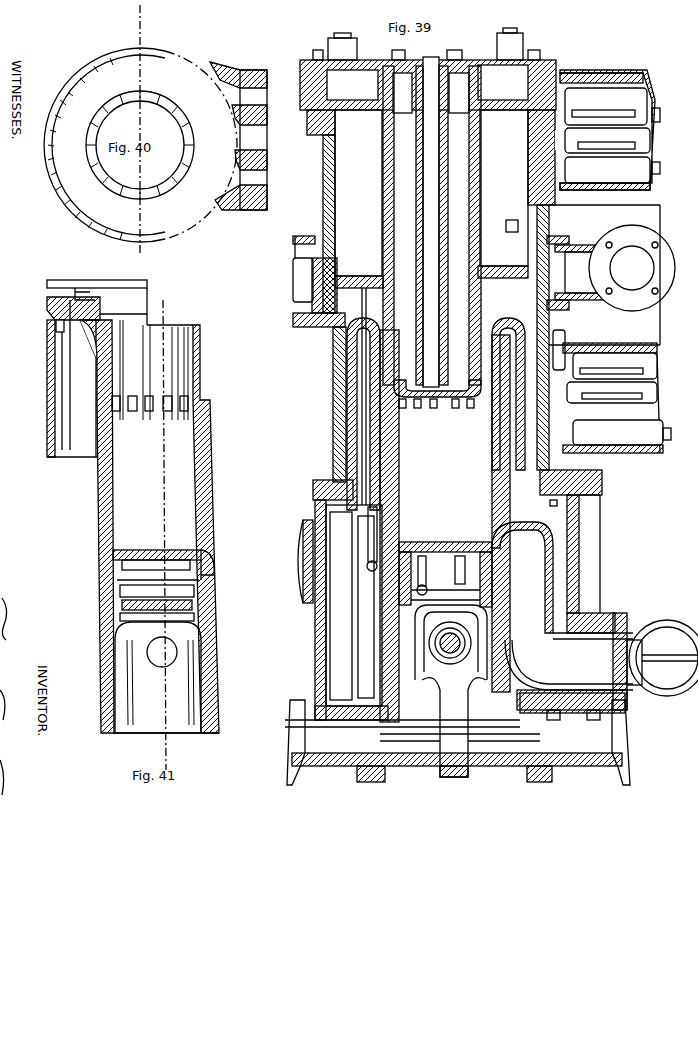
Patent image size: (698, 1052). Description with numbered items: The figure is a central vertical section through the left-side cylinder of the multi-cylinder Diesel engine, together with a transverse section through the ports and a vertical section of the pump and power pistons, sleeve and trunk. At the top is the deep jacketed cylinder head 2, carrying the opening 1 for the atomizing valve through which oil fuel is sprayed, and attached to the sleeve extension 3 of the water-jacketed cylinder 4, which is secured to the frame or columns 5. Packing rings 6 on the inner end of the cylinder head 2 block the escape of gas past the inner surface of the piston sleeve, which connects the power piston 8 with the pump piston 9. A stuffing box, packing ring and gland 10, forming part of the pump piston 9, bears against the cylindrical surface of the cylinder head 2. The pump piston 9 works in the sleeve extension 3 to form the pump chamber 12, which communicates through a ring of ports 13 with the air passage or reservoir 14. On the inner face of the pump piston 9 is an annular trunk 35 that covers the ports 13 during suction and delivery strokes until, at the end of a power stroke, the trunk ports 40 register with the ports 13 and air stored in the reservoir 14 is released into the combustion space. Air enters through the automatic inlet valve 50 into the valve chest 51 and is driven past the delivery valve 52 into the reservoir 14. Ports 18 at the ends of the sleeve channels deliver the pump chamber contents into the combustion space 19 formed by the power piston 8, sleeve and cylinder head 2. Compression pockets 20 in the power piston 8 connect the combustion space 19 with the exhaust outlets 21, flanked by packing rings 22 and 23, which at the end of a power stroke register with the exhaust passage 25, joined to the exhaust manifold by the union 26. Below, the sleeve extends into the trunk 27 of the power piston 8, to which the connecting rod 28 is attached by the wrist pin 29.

In FIG. 39, the opening for the atomizing valve 1 is at (433, 222).
In FIG. 39, the cylinder head 2 is at (378, 83).
In FIG. 39, the sleeve extension 3 is at (323, 185).
In FIG. 39, the water-jacketed cylinder 4 is at (600, 552).
In FIG. 39, the frame or columns 5 is at (457, 404).
In FIG. 39, the packing rings 6 is at (482, 365).
In FIG. 41, the power piston 8 is at (113, 555).
In FIG. 39, the pump piston 9 is at (355, 276).
In FIG. 41, the pump piston 9 is at (70, 296).
In FIG. 39, the stuffing box, packing ring and gland 10 is at (500, 266).
In FIG. 41, the stuffing box, packing ring and gland 10 is at (105, 284).
In FIG. 39, the pump chamber 12 is at (431, 193).
In FIG. 39, the ring of ports 13 is at (322, 322).
In FIG. 39, the air passage 14 is at (293, 282).
In FIG. 39, the ports 18 is at (470, 410).
In FIG. 40, the ports 18 is at (195, 147).
In FIG. 41, the ports 18 is at (210, 402).
In FIG. 39, the combustion space 19 is at (445, 475).
In FIG. 41, the combustion space 19 is at (156, 479).
In FIG. 39, the compression pockets 20 is at (480, 540).
In FIG. 41, the compression pockets 20 is at (172, 540).
In FIG. 41, the exhaust outlets 21 is at (208, 555).
In FIG. 39, the packing ring 22 is at (492, 486).
In FIG. 41, the packing ring 22 is at (99, 512).
In FIG. 39, the packing ring 23 is at (343, 600).
In FIG. 41, the packing ring 23 is at (113, 613).
In FIG. 39, the exhaust passage 25 is at (562, 606).
In FIG. 39, the union 26 is at (624, 712).
In FIG. 39, the trunk 27 is at (503, 705).
In FIG. 41, the trunk 27 is at (214, 670).
In FIG. 39, the connecting rod 28 is at (454, 727).
In FIG. 39, the wrist pin 29 is at (452, 665).
In FIG. 39, the trunk 35 is at (333, 385).
In FIG. 41, the trunk 35 is at (47, 378).
In FIG. 39, the trunk ports 40 is at (333, 360).
In FIG. 40, the trunk ports 40 is at (58, 120).
In FIG. 41, the trunk ports 40 is at (47, 327).
In FIG. 39, the inlet valve 50 is at (615, 280).
In FIG. 39, the valve chest 51 is at (611, 265).
In FIG. 39, the delivery valve 52 is at (610, 261).